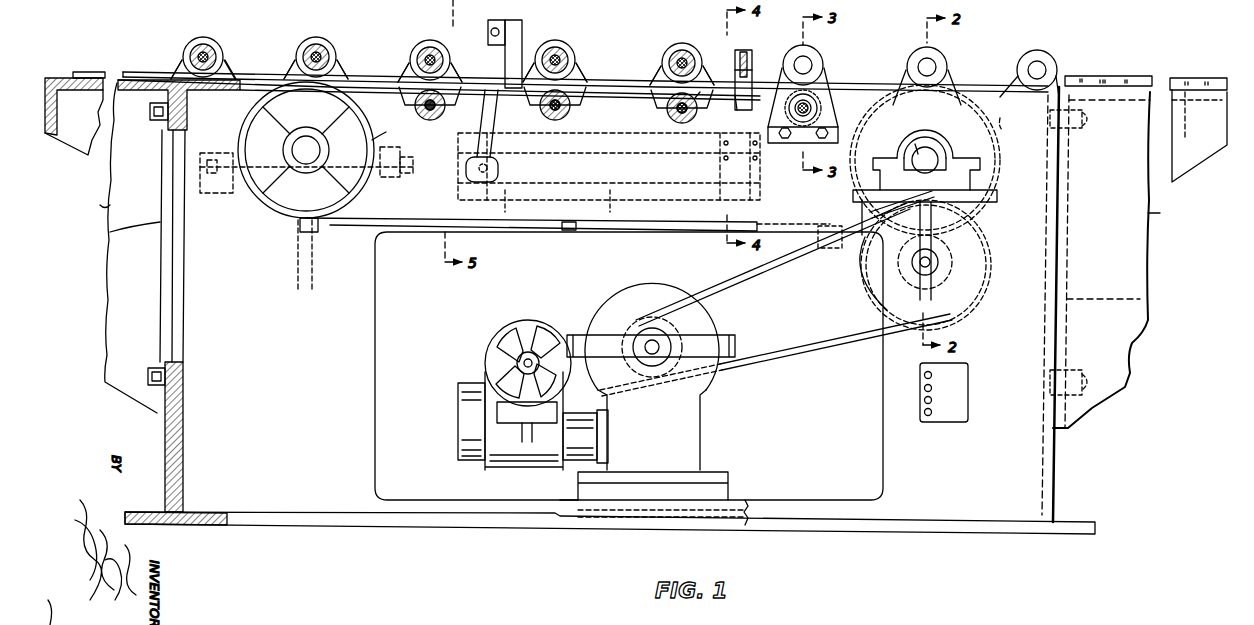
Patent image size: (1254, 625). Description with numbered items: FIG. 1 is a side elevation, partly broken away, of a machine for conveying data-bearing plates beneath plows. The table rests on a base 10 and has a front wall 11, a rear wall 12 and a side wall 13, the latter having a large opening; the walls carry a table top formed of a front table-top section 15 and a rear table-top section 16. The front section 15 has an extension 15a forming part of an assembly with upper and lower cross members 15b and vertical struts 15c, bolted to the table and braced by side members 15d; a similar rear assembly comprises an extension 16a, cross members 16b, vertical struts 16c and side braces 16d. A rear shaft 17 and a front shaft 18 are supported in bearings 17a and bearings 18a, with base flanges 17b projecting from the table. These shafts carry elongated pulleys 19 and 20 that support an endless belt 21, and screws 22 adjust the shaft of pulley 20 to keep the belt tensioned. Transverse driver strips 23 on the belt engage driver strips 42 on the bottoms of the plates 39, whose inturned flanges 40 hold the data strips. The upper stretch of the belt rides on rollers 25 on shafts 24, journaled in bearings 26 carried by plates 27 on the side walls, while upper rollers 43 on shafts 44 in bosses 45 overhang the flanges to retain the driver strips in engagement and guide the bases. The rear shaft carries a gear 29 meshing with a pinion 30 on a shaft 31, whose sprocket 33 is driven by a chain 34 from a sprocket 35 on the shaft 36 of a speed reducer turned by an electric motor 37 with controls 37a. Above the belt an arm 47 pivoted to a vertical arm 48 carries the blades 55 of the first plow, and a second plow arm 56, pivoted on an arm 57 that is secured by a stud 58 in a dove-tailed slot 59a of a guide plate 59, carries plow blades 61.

The base 10 is at (805, 528).
The front wall 11 is at (185, 399).
The rear wall 12 is at (1040, 432).
The side wall 13 is at (905, 468).
The table-top section 15 is at (205, 92).
The extension 15a is at (70, 78).
The cross members 15b is at (115, 398).
The vertical struts 15c is at (110, 232).
The side members 15d is at (94, 199).
The table-top section 16 is at (1015, 98).
The extension 16a is at (1108, 92).
The cross members 16b is at (1085, 122).
The vertical struts 16c is at (1140, 299).
The side braces 16d is at (1166, 213).
The shaft 17 is at (930, 158).
The bearings 17a is at (908, 132).
The base flanges 17b is at (920, 196).
The shaft 18 is at (282, 215).
The bearings 18a is at (308, 135).
The pulley or conveyor 19 is at (1000, 160).
The pulley or conveyor 20 is at (387, 128).
The endless belt 21 is at (400, 218).
The screws 22 is at (223, 195).
The driver strips 23 is at (318, 228).
The shafts 24 is at (415, 108).
The rollers 25 is at (432, 116).
The bearings 26 is at (808, 105).
The plates 27 is at (838, 133).
The gear 29 is at (868, 210).
The pinion 30 is at (975, 250).
The shaft 31 is at (935, 268).
The sprocket 33 is at (865, 278).
The chain 34 is at (770, 258).
The sprocket 35 is at (680, 330).
The shaft 36 is at (660, 347).
The electric motor 37 is at (503, 472).
The controls 37a is at (970, 398).
The plates 39 is at (612, 85).
The inturned flanges 40 is at (385, 78).
The driver strips 42 is at (228, 73).
The rollers 43 is at (332, 57).
The shafts 44 is at (210, 55).
The bosses 45 is at (187, 50).
The arm 47 is at (745, 50).
The vertical arm 48 is at (737, 100).
The blades 55 is at (735, 75).
The arm 56 is at (522, 20).
The arm 57 is at (505, 62).
The stud 58 is at (498, 170).
The guide plate 59 is at (515, 205).
The dove-tailed slot 59a is at (624, 205).
The plow blades 61 is at (525, 48).